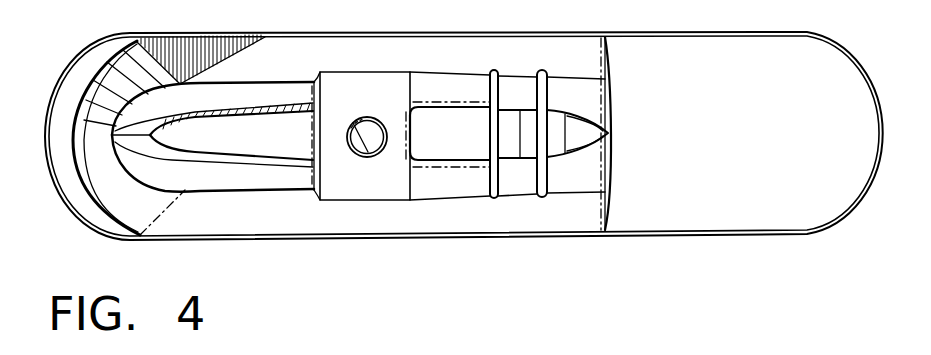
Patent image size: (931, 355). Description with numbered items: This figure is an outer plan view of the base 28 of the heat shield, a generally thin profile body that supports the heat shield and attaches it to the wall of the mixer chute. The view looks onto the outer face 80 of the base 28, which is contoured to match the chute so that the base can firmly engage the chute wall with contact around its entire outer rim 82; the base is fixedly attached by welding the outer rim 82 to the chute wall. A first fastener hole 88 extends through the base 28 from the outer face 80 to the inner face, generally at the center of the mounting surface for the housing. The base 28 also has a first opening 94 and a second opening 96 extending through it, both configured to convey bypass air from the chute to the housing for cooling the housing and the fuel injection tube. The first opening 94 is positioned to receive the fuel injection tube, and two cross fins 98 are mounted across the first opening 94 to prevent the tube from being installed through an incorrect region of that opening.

The base 28 is at (342, 161).
The outer face 80 is at (365, 150).
The outer rim 82 is at (690, 237).
The first fastener hole 88 is at (352, 118).
The first opening 94 is at (525, 160).
The second opening 96 is at (205, 158).
The cross fins 98 is at (547, 68).